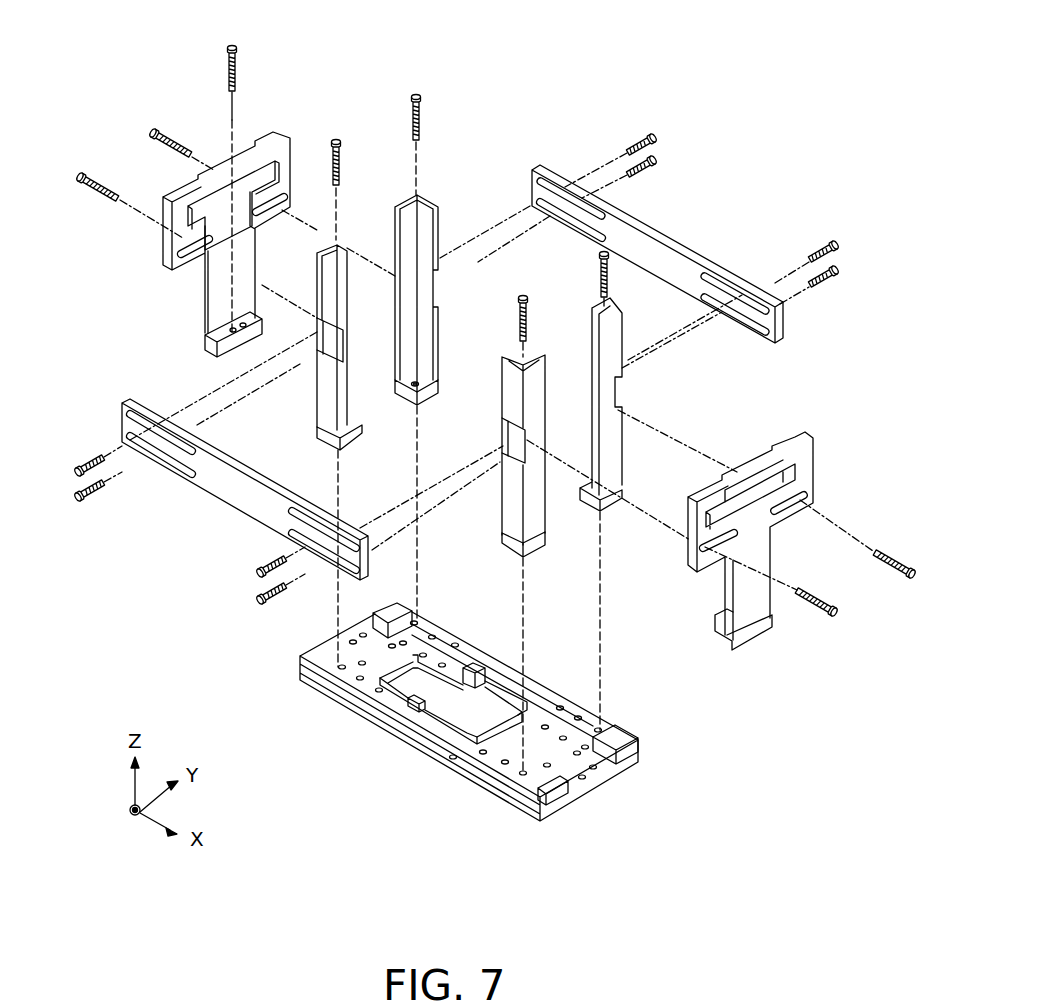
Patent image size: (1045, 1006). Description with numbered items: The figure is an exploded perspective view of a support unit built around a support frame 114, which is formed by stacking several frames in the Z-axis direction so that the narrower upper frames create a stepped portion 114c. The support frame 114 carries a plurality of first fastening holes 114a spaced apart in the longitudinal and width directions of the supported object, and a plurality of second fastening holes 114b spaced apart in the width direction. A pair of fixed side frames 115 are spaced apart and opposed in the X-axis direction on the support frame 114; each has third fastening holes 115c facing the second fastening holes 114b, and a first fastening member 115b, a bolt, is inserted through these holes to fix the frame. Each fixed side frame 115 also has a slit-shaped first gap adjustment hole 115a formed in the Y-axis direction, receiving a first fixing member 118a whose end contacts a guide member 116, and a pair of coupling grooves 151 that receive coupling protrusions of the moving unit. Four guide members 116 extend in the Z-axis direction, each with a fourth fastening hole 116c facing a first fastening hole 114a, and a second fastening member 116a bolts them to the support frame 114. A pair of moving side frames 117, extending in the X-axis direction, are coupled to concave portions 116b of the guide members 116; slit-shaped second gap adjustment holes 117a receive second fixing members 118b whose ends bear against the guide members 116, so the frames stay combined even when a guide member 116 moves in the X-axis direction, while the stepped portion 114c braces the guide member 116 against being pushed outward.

The support frame 114 is at (353, 706).
The first fastening holes 114a is at (404, 641).
The second fastening holes 114b is at (352, 643).
The stepped portion 114c is at (503, 742).
The fixed side frame 115 is at (805, 468).
The first gap adjustment hole 115a is at (806, 498).
The first fastening member 115b is at (232, 46).
The third fastening holes 115c is at (215, 346).
The guide member 116 is at (425, 205).
The second fastening member 116a is at (417, 95).
The concave portion 116b is at (346, 338).
The fourth fastening hole 116c is at (422, 382).
The moving side frame 117 is at (236, 496).
The second gap adjustment hole 117a is at (180, 466).
The first fixing member 118a is at (888, 570).
The second fixing member 118b is at (86, 496).
The coupling groove 151 is at (805, 435).